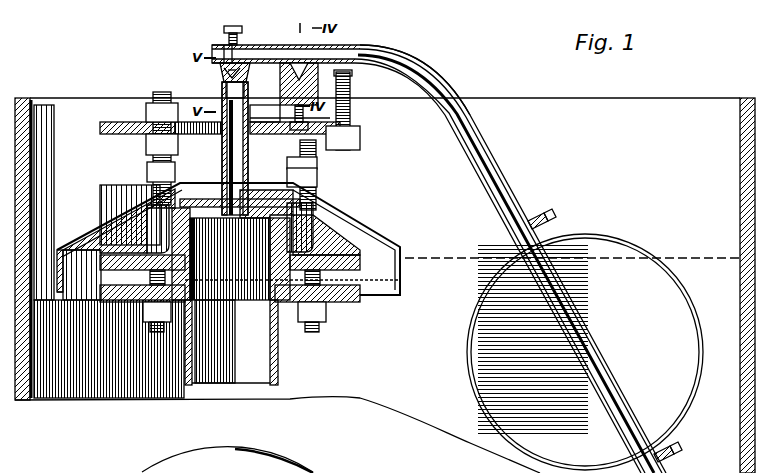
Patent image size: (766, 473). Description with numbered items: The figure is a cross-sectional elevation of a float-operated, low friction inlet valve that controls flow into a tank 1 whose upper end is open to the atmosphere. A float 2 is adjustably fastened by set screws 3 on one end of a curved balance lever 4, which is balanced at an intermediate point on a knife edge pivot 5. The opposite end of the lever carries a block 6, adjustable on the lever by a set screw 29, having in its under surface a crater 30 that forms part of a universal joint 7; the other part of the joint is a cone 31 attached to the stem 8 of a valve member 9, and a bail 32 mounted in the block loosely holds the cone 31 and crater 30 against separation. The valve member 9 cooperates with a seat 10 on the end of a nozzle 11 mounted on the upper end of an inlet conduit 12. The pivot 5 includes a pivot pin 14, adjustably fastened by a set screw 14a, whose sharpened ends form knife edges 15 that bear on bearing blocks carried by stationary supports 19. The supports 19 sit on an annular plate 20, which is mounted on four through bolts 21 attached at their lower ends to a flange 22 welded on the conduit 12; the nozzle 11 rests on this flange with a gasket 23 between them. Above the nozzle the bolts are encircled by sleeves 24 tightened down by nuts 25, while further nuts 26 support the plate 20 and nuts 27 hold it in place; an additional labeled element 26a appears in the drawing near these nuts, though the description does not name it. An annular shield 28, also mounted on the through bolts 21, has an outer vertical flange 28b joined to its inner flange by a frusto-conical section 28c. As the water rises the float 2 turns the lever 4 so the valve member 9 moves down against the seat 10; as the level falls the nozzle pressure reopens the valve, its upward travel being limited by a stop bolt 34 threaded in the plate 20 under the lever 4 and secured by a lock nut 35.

The tank 1 is at (32, 108).
The float 2 is at (638, 262).
The set screws 3 is at (556, 214).
The curved balance lever 4 is at (486, 146).
The knife edge pivot 5 is at (336, 46).
The block 6 is at (214, 46).
The universal joint 7 is at (248, 72).
The stem 8 is at (222, 142).
The valve member 9 is at (214, 200).
The seat 10 is at (262, 222).
The nozzle 11 is at (312, 236).
The inlet conduit 12 is at (280, 360).
The pivot pin 14 is at (289, 62).
The set screw 14a is at (292, 132).
The knife edges 15 is at (385, 56).
The stationary supports 19 is at (265, 113).
The annular plate 20 is at (100, 134).
The through bolts 21 is at (158, 92).
The flange 22 is at (345, 296).
The gasket 23 is at (335, 260).
The sleeves 24 is at (147, 210).
The nuts 25 is at (147, 174).
The nuts 26 is at (146, 146).
The wall 26a is at (186, 195).
The nuts 27 is at (146, 112).
The annular shield 28 is at (88, 214).
The outer vertical flange 28b is at (403, 288).
The frusto-conical section 28c is at (400, 250).
The set screw 29 is at (224, 30).
The crater 30 is at (224, 74).
The cone 31 is at (228, 80).
The bail 32 is at (248, 90).
The stop bolt 34 is at (350, 90).
The lock nut 35 is at (360, 122).